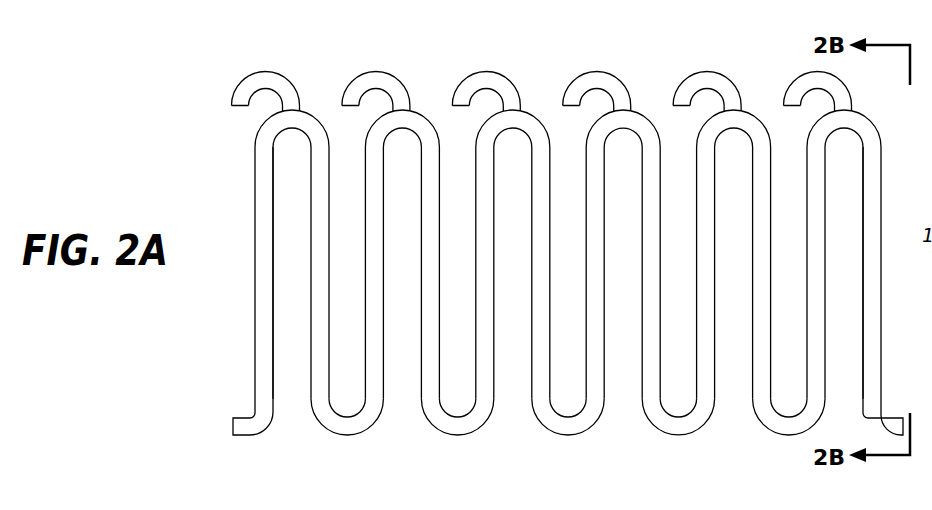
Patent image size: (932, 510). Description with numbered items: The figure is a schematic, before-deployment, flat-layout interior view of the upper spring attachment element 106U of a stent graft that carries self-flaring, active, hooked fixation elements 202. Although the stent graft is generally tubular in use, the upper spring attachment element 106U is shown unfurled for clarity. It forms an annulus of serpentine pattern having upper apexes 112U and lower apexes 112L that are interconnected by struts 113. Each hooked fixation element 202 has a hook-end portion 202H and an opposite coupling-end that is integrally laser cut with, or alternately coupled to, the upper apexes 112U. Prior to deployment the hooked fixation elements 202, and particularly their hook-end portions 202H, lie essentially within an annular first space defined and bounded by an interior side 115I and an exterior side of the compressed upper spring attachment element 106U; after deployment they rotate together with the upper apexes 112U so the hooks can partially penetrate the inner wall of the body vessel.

The upper spring attachment element 106U is at (229, 361).
The struts 113 is at (320, 255).
The upper apexes 112U is at (286, 117).
The lower apexes 112L is at (354, 429).
The hooked fixation elements 202 is at (421, 107).
The hook-end portions 202H is at (351, 80).
The interior side 115I is at (807, 427).